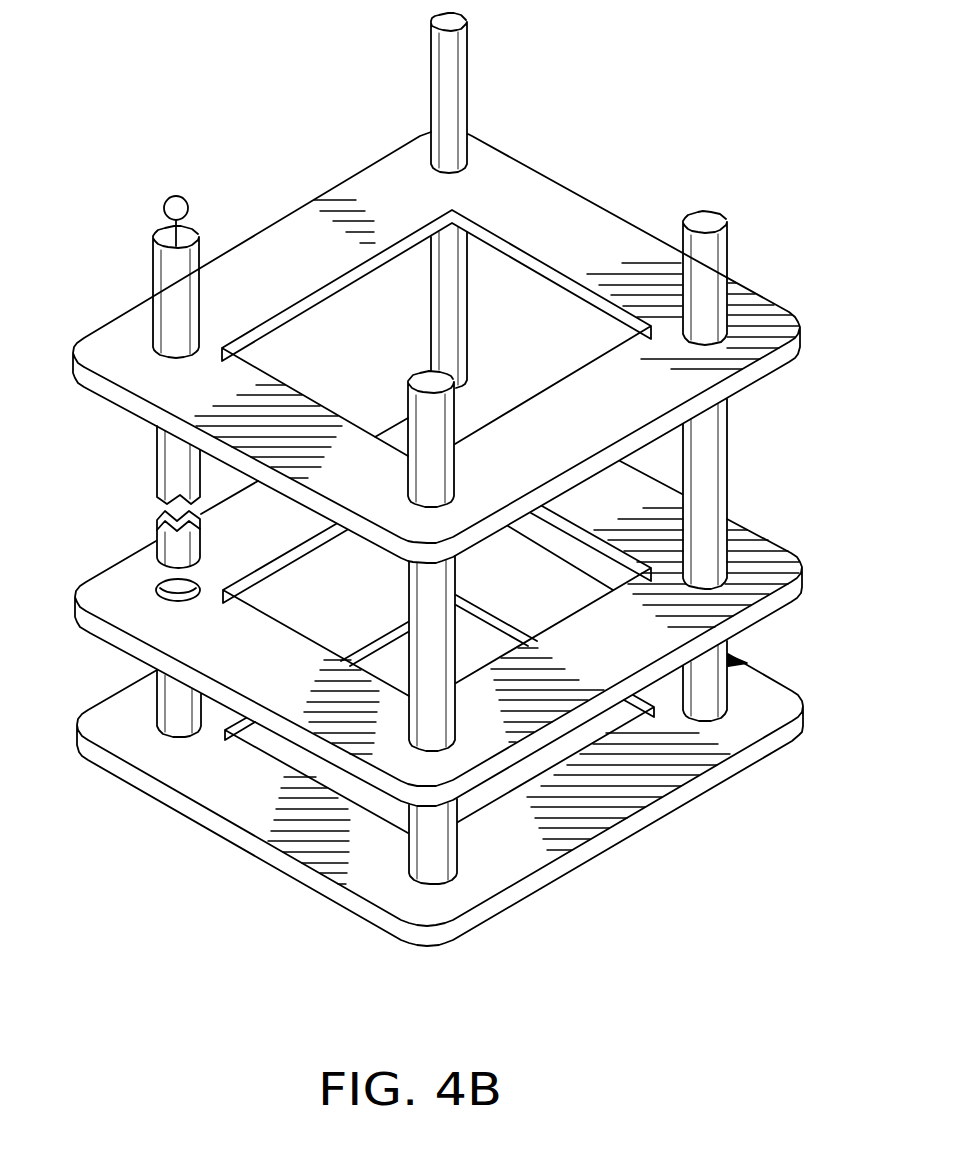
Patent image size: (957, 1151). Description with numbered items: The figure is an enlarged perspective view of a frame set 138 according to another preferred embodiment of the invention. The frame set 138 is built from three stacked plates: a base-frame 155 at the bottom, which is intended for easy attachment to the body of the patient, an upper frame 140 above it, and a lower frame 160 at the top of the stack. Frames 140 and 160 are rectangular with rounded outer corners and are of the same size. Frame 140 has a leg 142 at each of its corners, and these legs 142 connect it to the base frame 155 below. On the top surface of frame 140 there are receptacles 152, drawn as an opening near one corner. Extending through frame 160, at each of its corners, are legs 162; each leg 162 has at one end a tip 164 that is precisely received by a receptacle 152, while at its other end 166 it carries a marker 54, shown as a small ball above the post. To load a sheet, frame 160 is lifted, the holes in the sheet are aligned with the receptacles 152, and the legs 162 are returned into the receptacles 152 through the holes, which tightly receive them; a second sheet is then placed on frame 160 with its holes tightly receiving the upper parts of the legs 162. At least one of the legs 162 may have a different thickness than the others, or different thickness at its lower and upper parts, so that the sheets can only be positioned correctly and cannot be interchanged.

The frame set 138 is at (344, 126).
The lower frame 160 is at (547, 192).
The upper frame 140 is at (757, 563).
The base-frame 155 is at (763, 692).
The leg 142 is at (712, 703).
The other end of leg 166 is at (158, 236).
The marker 54 is at (165, 201).
The leg 162 is at (160, 471).
The tip 164 is at (160, 563).
The receptacle 152 is at (160, 597).